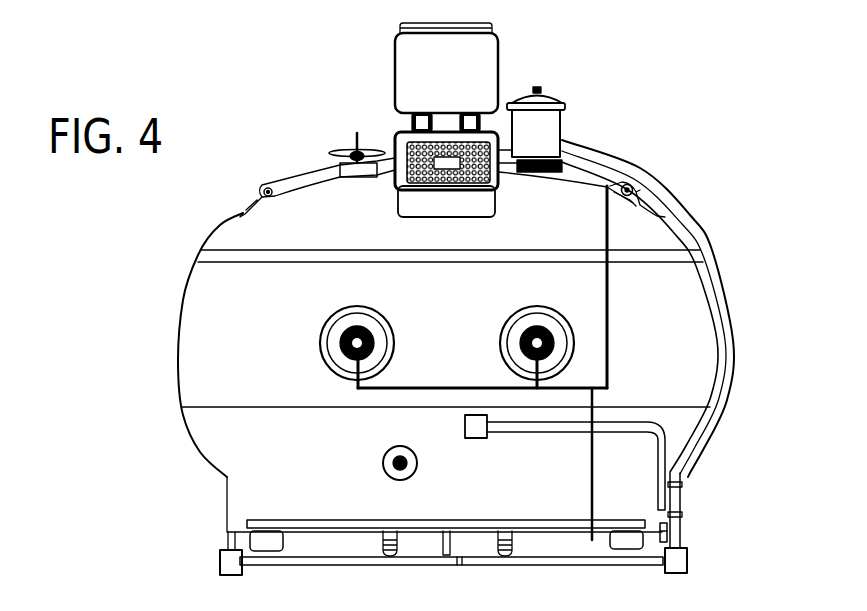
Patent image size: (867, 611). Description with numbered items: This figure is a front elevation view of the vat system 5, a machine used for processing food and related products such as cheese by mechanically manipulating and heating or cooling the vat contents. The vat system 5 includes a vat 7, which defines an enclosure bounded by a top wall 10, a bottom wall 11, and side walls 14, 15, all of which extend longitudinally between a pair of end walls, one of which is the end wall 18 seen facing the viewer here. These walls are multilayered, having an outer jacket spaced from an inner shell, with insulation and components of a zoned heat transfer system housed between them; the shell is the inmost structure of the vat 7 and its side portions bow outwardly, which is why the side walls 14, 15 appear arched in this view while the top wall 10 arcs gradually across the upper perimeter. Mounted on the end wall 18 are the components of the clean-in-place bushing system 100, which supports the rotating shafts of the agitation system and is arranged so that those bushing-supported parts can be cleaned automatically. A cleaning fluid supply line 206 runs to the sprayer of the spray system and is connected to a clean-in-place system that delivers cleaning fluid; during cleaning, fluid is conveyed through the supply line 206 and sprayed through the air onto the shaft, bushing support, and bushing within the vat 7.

The vat system 5 is at (626, 134).
The vat 7 is at (645, 201).
The top wall 10 is at (323, 175).
The bottom wall 11 is at (561, 567).
The side wall 14 is at (178, 318).
The side wall 15 is at (706, 244).
The end wall 18 is at (462, 316).
The clean-in-place bushing system 100 is at (340, 330).
The cleaning fluid supply line 206 is at (446, 386).